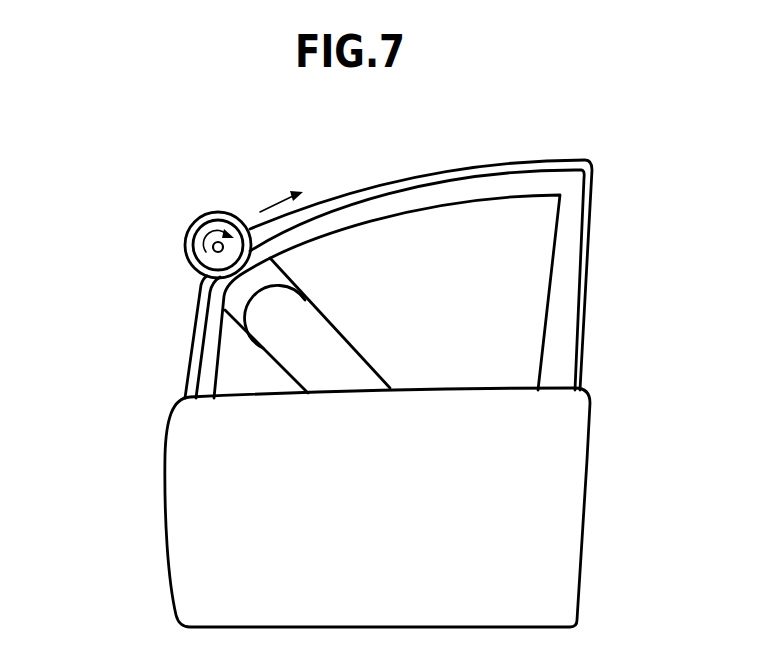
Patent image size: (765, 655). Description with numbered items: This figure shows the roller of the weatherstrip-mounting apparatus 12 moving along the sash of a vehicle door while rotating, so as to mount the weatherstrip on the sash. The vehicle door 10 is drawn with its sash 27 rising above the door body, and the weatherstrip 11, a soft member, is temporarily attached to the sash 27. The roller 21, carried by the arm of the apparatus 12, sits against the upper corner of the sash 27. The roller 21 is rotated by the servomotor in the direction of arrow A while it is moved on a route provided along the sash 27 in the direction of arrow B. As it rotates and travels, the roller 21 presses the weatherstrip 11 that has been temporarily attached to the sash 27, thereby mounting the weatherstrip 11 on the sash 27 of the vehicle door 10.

The vehicle door 10 is at (164, 455).
The weatherstrip 11 is at (433, 173).
The weatherstrip-mounting apparatus 12 is at (343, 340).
The roller 21 is at (200, 220).
The sash 27 is at (563, 285).
The arrow A is at (205, 242).
The arrow B is at (273, 205).